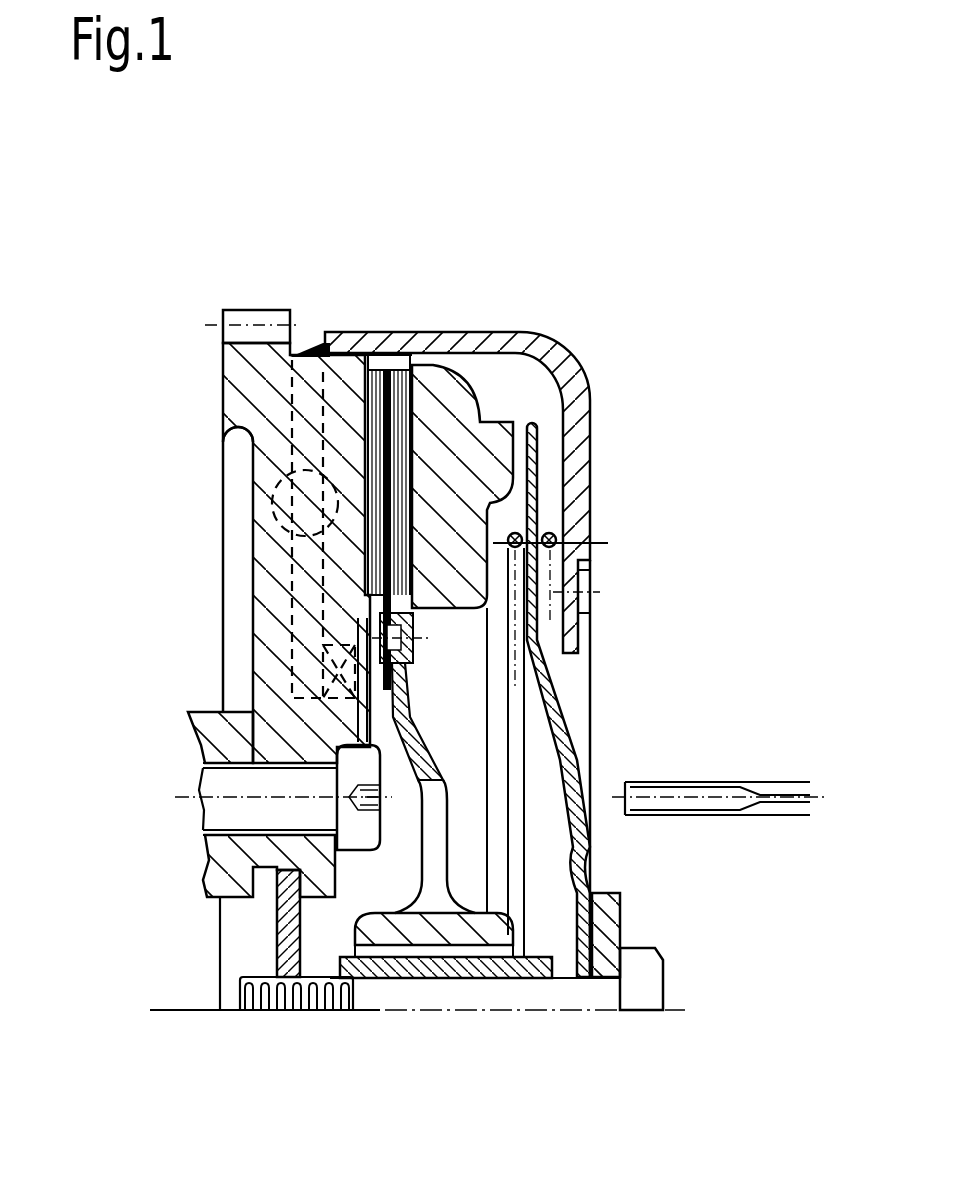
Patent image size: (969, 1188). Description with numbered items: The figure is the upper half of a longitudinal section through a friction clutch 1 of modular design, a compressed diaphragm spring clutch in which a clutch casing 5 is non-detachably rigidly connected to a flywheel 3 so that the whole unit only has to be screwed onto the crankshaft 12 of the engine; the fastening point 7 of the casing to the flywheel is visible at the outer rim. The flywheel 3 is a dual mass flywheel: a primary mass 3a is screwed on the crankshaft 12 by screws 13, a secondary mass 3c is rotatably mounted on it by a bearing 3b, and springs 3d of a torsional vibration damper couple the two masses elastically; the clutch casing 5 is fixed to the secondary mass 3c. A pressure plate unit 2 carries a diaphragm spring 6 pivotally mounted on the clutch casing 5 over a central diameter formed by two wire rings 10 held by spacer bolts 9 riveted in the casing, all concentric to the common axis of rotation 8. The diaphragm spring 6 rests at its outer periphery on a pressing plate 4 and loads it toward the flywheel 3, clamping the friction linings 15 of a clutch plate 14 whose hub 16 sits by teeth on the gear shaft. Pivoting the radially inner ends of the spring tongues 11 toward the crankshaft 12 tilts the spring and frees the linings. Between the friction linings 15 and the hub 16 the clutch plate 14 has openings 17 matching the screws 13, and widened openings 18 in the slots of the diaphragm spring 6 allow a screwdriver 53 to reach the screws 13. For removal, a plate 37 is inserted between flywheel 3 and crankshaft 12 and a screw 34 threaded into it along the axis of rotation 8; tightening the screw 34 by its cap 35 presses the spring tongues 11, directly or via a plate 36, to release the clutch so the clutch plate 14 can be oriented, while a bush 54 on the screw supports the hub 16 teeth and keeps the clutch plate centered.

The friction clutch 1 is at (103, 192).
The pressure plate unit 2 is at (645, 333).
The flywheel 3 is at (230, 372).
The primary mass 3a is at (258, 400).
The bearing 3b is at (410, 677).
The secondary mass 3c is at (343, 393).
The springs 3d is at (270, 518).
The pressing plate 4 is at (463, 410).
The clutch casing 5 is at (537, 355).
The diaphragm spring 6 is at (535, 478).
The fastening screw 7 is at (318, 338).
The axis of rotation 8 is at (163, 1010).
The spacer bolts 9 is at (557, 590).
The wire rings 10 is at (513, 533).
The spring tongues 11 is at (572, 775).
The crankshaft 12 is at (207, 717).
The screws 13 is at (215, 807).
The clutch plate 14 is at (398, 688).
The friction linings 15 is at (396, 388).
The hub 16 is at (460, 935).
The openings 17 is at (440, 850).
The openings 18 is at (583, 845).
The screw 34 is at (405, 995).
The cap 35 is at (650, 970).
The plate 36 is at (607, 930).
The plate 37 is at (283, 920).
The screwdriver 53 is at (747, 790).
The bush 54 is at (457, 960).